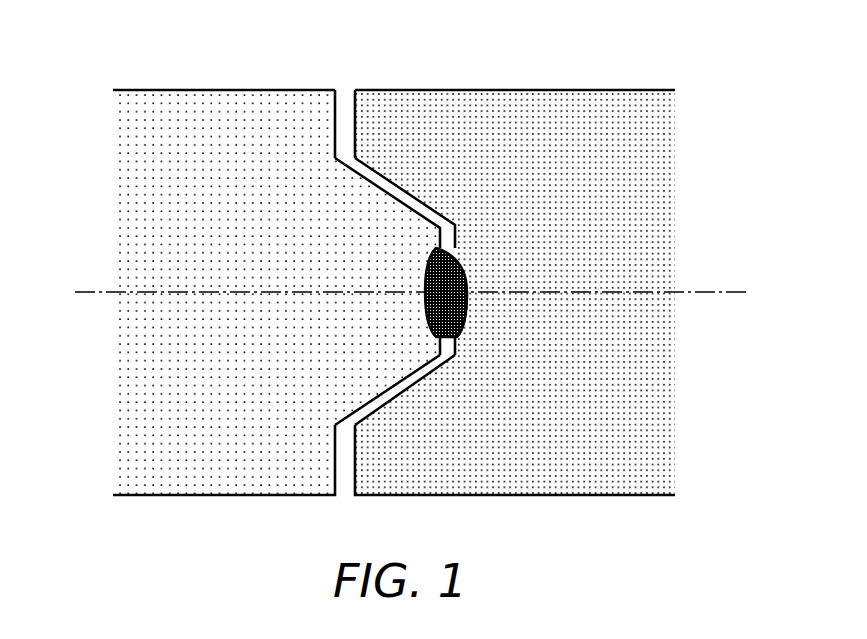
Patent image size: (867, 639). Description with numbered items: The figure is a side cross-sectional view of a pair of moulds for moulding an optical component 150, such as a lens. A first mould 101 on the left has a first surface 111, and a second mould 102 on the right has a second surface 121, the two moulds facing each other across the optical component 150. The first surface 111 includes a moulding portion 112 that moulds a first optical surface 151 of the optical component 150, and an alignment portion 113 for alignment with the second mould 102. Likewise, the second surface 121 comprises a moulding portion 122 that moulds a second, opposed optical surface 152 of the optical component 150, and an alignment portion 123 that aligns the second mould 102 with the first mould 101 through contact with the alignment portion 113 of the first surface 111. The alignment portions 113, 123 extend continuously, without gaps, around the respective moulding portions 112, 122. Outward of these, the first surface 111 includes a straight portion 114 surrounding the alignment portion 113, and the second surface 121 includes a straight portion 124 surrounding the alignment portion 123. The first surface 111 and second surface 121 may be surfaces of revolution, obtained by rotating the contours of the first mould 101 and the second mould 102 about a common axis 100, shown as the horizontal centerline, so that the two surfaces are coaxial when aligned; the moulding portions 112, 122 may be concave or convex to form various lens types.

The axis 100 is at (708, 293).
The first mould 101 is at (220, 414).
The second mould 102 is at (562, 437).
The first surface 111 is at (266, 240).
The moulding portion 112 is at (414, 309).
The alignment portion 113 is at (386, 375).
The straight portion 114 is at (335, 117).
The second surface 121 is at (510, 201).
The moulding portion 122 is at (478, 316).
The alignment portion 123 is at (406, 406).
The straight portion 124 is at (355, 115).
The optical component 150 is at (467, 265).
The first optical surface 151 is at (427, 268).
The second optical surface 152 is at (467, 280).